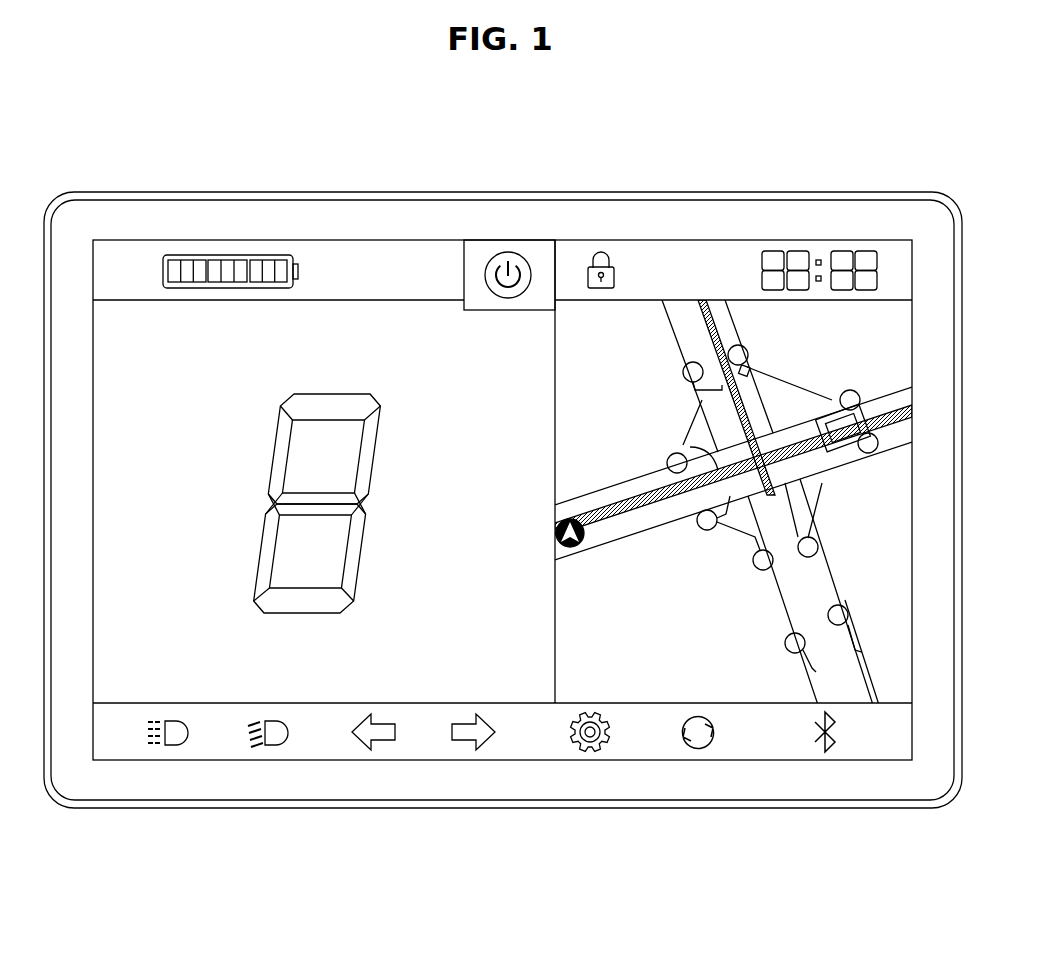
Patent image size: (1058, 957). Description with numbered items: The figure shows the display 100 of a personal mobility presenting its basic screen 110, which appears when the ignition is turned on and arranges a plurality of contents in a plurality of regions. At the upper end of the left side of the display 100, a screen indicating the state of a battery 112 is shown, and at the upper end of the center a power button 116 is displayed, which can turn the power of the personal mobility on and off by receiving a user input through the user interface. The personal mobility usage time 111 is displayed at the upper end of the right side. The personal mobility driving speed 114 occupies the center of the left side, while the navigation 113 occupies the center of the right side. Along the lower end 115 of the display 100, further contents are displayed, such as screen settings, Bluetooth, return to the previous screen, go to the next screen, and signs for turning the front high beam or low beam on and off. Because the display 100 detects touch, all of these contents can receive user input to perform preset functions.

The display 100 is at (852, 193).
The basic screen 110 is at (165, 240).
The personal mobility usage time 111 is at (662, 258).
The state of a battery 112 is at (375, 252).
The navigation 113 is at (775, 690).
The personal mobility driving speed 114 is at (140, 665).
The lower end 115 is at (536, 735).
The power button 116 is at (527, 255).